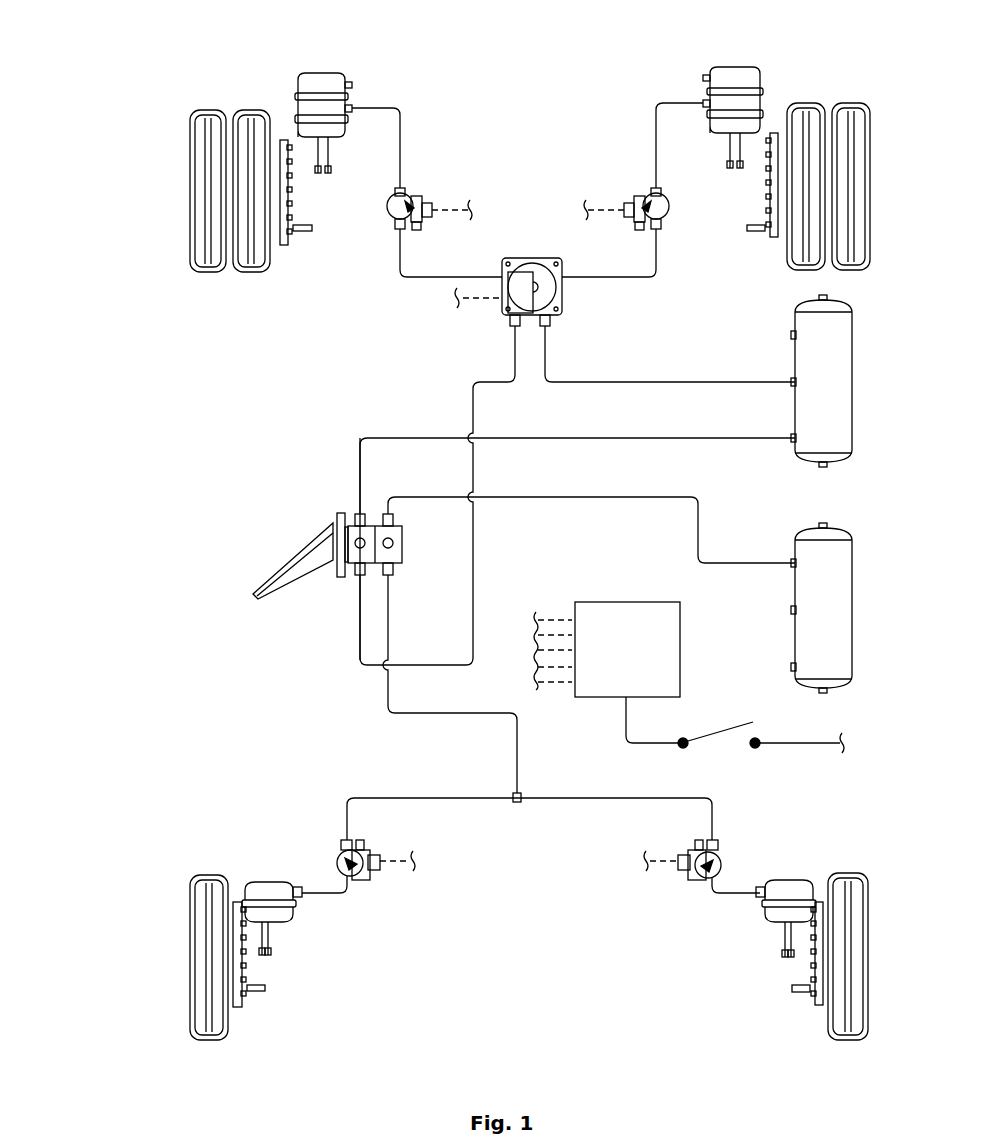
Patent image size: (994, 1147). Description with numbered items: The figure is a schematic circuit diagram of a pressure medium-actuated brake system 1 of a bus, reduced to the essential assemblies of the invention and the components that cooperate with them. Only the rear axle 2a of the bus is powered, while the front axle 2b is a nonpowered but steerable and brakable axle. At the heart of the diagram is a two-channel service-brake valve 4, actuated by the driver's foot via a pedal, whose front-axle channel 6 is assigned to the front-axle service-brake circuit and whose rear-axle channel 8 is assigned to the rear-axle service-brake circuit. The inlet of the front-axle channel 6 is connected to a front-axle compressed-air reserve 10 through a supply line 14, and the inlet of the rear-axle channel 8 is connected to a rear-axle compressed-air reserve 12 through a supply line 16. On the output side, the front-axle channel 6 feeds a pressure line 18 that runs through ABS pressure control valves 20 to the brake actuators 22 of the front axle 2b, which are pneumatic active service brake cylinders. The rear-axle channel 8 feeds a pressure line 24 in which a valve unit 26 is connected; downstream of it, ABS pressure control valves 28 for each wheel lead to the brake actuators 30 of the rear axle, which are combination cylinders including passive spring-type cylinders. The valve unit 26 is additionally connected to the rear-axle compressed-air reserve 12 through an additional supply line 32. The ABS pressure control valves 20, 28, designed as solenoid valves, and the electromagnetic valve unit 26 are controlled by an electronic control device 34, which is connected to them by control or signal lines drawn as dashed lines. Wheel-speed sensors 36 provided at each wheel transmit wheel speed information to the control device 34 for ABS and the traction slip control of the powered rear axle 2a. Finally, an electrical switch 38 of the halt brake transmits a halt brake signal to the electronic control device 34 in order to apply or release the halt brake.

The brake system 1 is at (180, 82).
The rear axle 2a is at (173, 183).
The front axle 2b is at (173, 968).
The two-channel service-brake valve 4 is at (275, 551).
The front-axle channel 6 is at (400, 549).
The rear-axle channel 8 is at (364, 530).
The front-axle compressed-air reserve 10 is at (812, 632).
The rear-axle compressed-air reserve 12 is at (806, 408).
The supply line 14 is at (700, 530).
The supply line 16 is at (623, 440).
The pressure line 18 is at (519, 764).
The ABS pressure control valves 20 is at (368, 880).
The brake actuators 22 is at (270, 890).
The pressure line 24 is at (475, 578).
The valve unit 26 is at (544, 272).
The ABS pressure control valves 28 is at (389, 209).
The brake actuators 30 is at (321, 80).
The additional supply line 32 is at (625, 381).
The electronic control device 34 is at (640, 668).
The wheel-speed sensors 36 is at (303, 232).
The electrical switch 38 is at (722, 750).